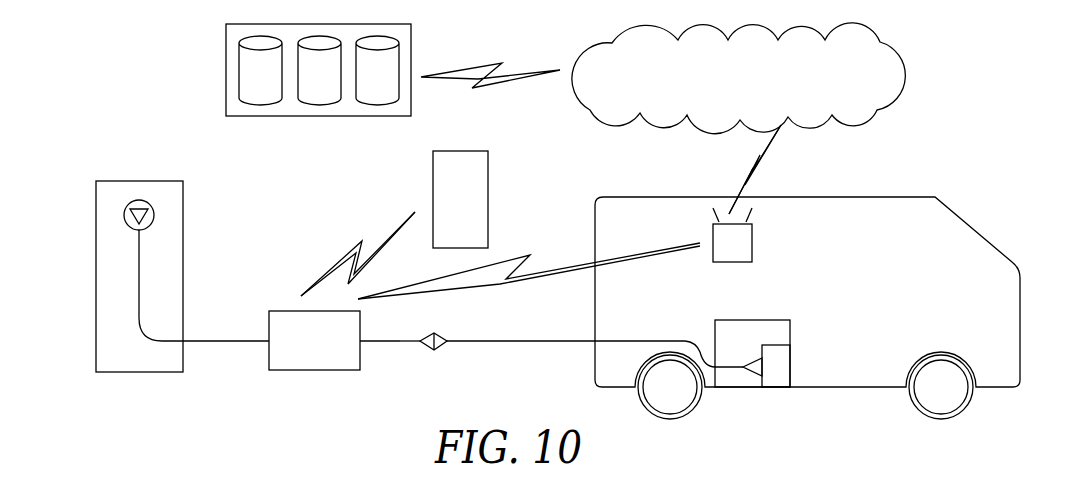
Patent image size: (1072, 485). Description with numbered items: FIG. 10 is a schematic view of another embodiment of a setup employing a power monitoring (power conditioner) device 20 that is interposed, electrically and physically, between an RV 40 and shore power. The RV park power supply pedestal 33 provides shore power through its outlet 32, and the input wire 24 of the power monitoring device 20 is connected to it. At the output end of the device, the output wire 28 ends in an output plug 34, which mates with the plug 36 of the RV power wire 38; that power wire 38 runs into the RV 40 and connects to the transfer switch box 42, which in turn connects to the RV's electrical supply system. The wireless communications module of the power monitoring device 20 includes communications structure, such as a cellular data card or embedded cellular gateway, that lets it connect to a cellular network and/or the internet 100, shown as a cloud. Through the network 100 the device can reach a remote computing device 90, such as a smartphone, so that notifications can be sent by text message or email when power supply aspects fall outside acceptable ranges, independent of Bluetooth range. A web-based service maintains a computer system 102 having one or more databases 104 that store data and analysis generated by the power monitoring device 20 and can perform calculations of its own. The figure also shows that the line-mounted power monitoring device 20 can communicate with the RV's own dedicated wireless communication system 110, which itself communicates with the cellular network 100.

The fluid transfer unit 20 is at (318, 372).
The inlet conduit 24 is at (205, 340).
The outlet conduit 28 is at (393, 345).
The pump 32 is at (124, 214).
The fluid source tank 33 is at (159, 191).
The coupling 34 is at (432, 334).
The connector 36 is at (438, 346).
The delivery hose 38 is at (560, 340).
The vehicle 40 is at (972, 184).
The vehicle fuel tank 42 is at (777, 375).
The mobile device 90 is at (478, 193).
The cellular network / internet 100 is at (755, 108).
The server 102 is at (232, 33).
The database 104 is at (377, 91).
The vehicle communication module 110 is at (733, 246).